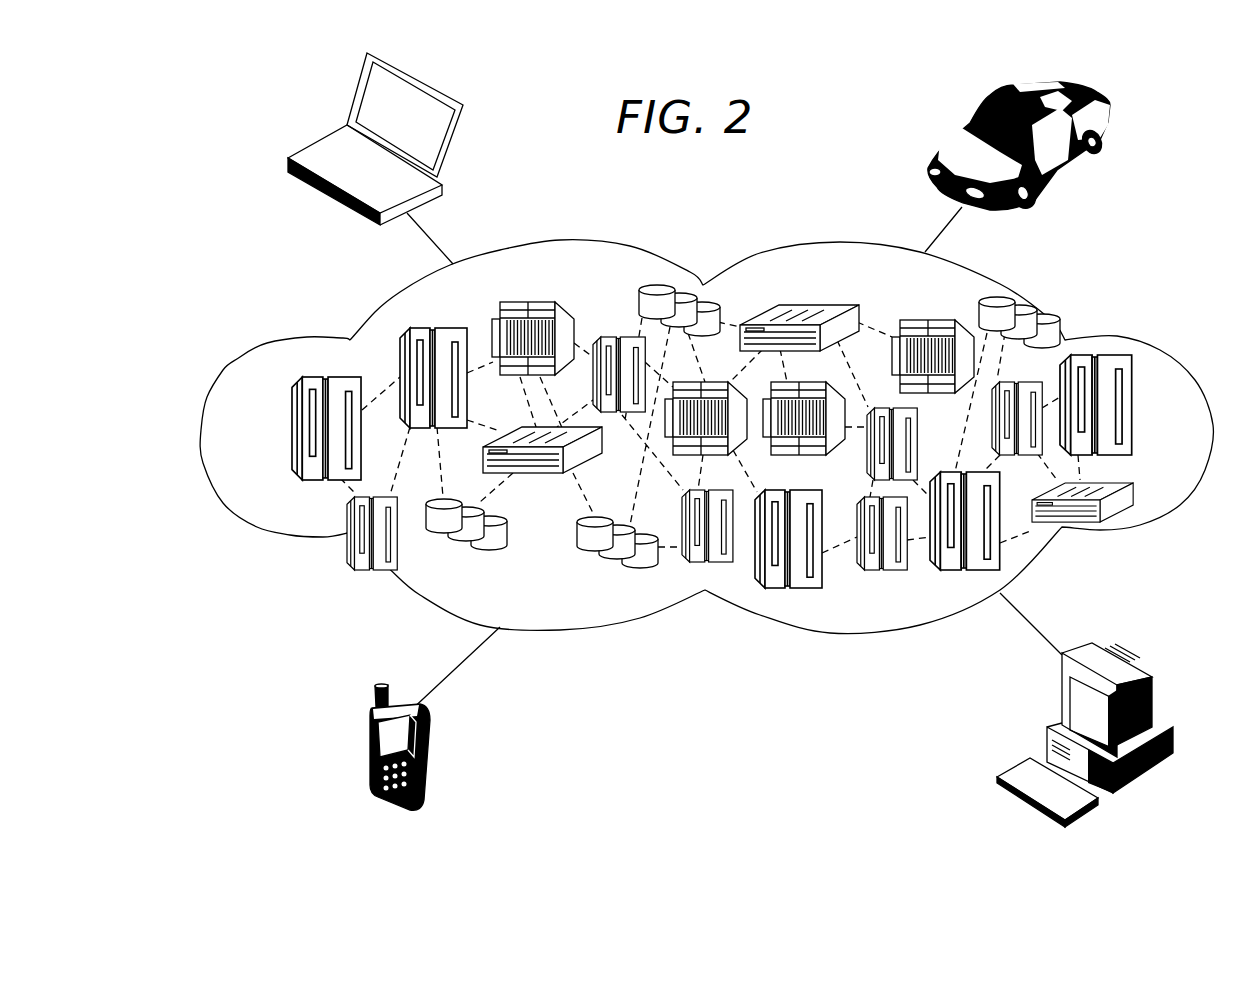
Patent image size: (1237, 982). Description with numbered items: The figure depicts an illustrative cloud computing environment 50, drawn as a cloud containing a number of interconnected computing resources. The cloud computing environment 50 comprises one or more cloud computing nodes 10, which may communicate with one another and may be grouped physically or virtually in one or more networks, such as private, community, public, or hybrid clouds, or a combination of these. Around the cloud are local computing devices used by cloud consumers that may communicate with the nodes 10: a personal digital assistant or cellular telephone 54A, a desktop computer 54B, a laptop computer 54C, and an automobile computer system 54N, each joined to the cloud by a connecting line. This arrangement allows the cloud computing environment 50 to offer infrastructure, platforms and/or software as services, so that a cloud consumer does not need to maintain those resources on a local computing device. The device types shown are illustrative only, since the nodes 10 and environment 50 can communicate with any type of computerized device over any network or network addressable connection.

The cloud computing nodes 10 is at (1115, 513).
The cloud computing environment 50 is at (1160, 355).
The personal digital assistant (PDA) or cellular telephone 54A is at (430, 715).
The desktop computer 54B is at (1052, 717).
The laptop computer 54C is at (328, 126).
The automobile computer system 54N is at (948, 136).